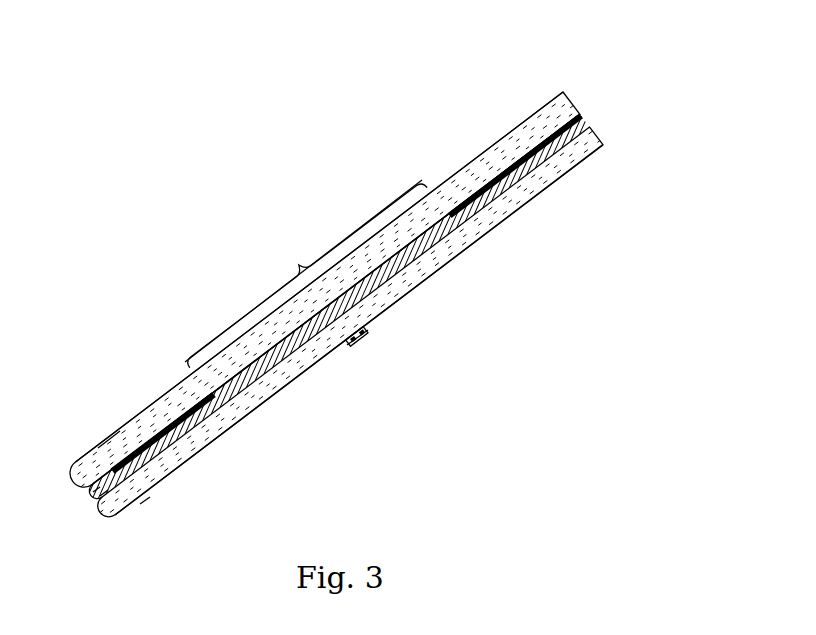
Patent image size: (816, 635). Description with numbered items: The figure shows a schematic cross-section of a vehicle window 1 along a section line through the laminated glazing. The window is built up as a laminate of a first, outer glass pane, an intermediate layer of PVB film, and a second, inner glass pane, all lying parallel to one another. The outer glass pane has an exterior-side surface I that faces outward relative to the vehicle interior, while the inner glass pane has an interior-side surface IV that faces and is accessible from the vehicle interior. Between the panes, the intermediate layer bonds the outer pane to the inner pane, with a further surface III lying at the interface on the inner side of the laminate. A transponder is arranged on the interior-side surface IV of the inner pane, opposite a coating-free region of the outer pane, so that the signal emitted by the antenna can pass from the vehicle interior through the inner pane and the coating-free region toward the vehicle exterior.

The vehicle window 1 is at (352, 100).
The exterior-side surface I is at (98, 448).
The lower interface III is at (100, 496).
The interior-side surface IV is at (140, 504).